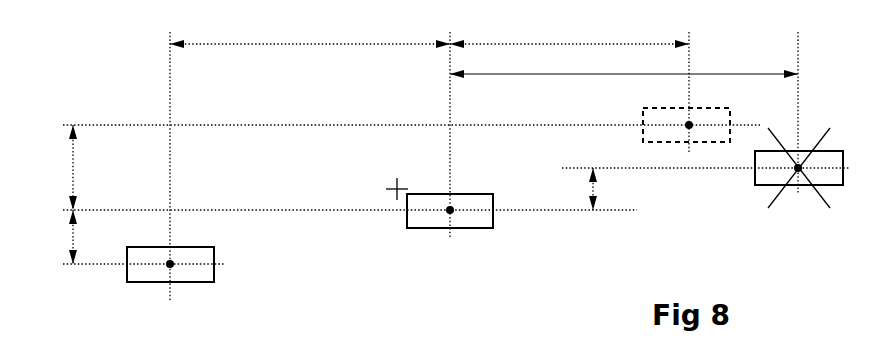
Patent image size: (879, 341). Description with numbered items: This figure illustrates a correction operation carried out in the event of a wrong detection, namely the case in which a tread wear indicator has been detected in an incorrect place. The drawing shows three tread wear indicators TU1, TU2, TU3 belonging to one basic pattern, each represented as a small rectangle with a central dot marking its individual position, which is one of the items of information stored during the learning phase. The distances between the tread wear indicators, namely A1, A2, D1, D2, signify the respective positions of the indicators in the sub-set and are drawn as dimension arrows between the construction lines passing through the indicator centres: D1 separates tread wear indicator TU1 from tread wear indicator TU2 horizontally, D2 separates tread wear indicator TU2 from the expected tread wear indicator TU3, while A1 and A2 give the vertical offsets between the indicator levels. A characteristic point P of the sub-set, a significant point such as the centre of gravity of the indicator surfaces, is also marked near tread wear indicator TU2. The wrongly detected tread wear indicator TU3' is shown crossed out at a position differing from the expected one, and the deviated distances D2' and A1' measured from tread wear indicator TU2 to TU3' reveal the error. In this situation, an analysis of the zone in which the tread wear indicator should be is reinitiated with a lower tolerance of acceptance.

The tread wear indicator TU1 is at (177, 279).
The tread wear indicator TU2 is at (451, 225).
The tread wear indicator TU3 is at (706, 115).
The tread wear indicator detected in an incorrect place TU3' is at (799, 174).
The characteristic point P is at (394, 187).
The distance between tread wear indicators A1 is at (51, 167).
The distance between tread wear indicators A2 is at (51, 237).
The vertical offset of displaced TU3' A1' is at (612, 189).
The distance between tread wear indicators D1 is at (310, 30).
The distance between tread wear indicators D2 is at (569, 30).
The horizontal distance between TU2 and TU3' D2' is at (624, 62).